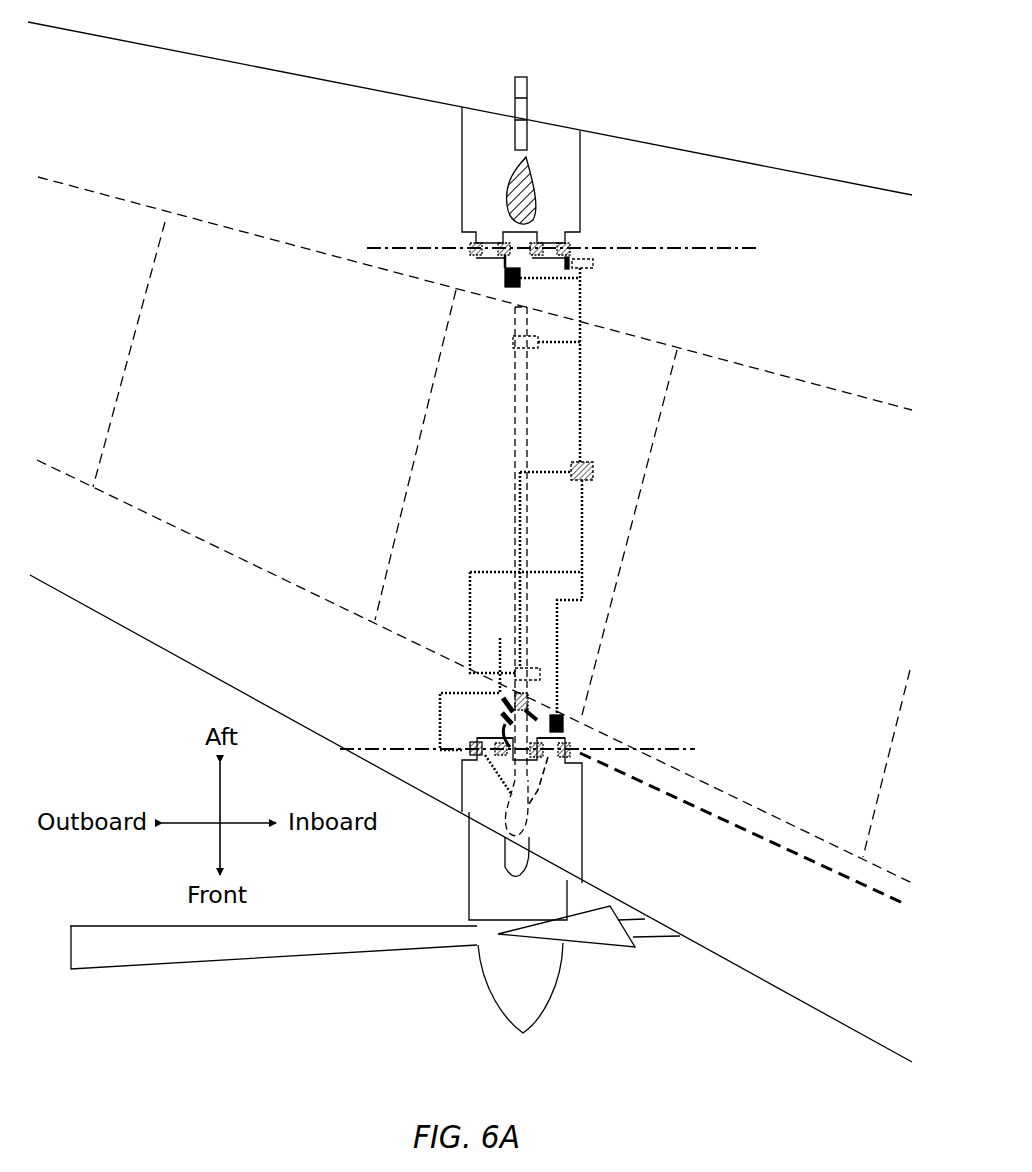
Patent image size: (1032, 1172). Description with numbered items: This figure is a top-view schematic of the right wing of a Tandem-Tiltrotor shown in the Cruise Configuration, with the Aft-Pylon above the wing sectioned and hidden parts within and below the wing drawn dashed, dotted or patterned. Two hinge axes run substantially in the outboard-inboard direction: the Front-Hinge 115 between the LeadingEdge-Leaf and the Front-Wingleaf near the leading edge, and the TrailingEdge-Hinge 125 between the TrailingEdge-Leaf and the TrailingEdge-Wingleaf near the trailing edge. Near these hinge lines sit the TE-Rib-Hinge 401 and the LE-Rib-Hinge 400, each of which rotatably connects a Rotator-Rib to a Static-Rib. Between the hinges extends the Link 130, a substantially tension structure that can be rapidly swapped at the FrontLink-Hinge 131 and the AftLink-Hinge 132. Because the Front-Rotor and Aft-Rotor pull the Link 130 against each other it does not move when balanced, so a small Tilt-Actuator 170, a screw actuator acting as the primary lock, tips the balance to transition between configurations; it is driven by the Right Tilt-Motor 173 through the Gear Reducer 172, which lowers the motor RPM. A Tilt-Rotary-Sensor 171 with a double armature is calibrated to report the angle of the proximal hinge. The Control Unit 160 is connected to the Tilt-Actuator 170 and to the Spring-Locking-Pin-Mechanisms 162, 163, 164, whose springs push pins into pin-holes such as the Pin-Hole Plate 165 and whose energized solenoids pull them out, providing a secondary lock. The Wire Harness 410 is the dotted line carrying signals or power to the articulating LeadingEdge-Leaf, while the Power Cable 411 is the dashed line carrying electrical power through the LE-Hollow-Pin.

The Front-Hinge 115 is at (709, 745).
The TrailingEdge-Hinge 125 is at (586, 248).
The Link 130 is at (515, 428).
The FrontLink-Hinge 131 is at (530, 583).
The AftLink-Hinge 132 is at (528, 77).
The Control Unit 160 is at (584, 488).
The Spring-Locking-Pin-Mechanism 162 is at (595, 263).
The Spring-Locking-Pin-Mechanism 163 is at (540, 665).
The Spring-Locking-Pin-Mechanism 164 is at (508, 349).
The Pin-Hole Plate 165 is at (565, 268).
The Tilt-Actuator 170 is at (500, 720).
The Tilt-Rotary-Sensor 171 is at (503, 271).
The Gear Reducer 172 is at (522, 701).
The Right Tilt-Motor 173 is at (527, 716).
The LE-Rib-Hinge 400 is at (567, 763).
The TE-Rib-Hinge 401 is at (568, 244).
The Wire Harness 410 is at (468, 753).
The Power Cable 411 is at (590, 762).